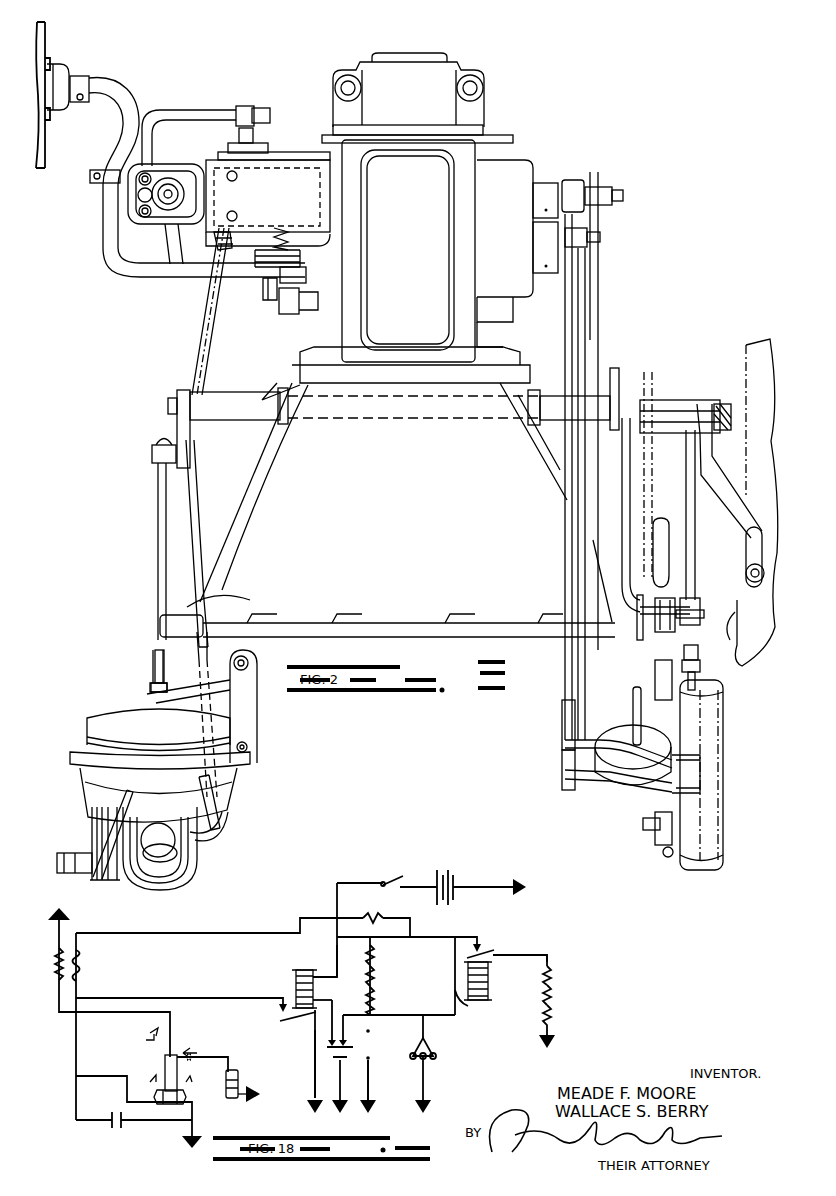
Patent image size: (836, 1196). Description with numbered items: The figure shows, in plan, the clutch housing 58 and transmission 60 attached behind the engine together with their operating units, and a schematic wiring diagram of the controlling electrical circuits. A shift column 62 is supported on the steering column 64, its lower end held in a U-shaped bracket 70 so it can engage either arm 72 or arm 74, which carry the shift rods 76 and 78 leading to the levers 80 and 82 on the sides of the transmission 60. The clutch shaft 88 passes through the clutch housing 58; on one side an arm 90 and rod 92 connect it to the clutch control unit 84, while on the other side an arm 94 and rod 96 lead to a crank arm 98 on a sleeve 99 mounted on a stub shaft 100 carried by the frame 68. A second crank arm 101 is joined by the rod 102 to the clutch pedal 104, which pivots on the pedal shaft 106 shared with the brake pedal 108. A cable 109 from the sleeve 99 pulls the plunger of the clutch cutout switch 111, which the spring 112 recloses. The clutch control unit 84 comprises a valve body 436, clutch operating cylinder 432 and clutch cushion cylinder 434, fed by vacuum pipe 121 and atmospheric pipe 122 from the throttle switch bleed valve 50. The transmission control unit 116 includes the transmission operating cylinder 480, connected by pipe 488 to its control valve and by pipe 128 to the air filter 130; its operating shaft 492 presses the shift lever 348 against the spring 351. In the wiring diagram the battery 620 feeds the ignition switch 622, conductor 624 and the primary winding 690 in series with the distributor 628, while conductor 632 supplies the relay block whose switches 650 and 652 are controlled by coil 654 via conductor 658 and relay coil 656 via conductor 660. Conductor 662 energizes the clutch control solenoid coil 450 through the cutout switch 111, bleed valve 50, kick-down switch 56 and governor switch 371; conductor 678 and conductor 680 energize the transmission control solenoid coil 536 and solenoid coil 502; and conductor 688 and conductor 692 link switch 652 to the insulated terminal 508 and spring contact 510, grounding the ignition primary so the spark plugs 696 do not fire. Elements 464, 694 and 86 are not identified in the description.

In FIG. 2, the frame 68 is at (46, 38).
In FIG. 2, the second air filter 130 is at (66, 50).
In FIG. 2, the pipe 128 is at (108, 90).
In FIG. 2, the transmission control unit 116 is at (168, 93).
In FIG. 2, the pipe 488 is at (212, 94).
In FIG. 2, the transmission operating cylinder 480 is at (235, 236).
In FIG. 2, the spring 351 is at (278, 228).
In FIG. 2, the transmission 60 is at (420, 257).
In FIG. 2, the lever 80 is at (549, 278).
In FIG. 2, the lever 82 is at (568, 182).
In FIG. 2, the operating shaft 492 is at (263, 281).
In FIG. 2, the shift lever 348 is at (279, 300).
In FIG. 2, the arm 94 is at (613, 368).
In FIG. 2, the brake pedal 108 is at (648, 380).
In FIG. 2, the pedal shaft 106 is at (668, 408).
In FIG. 2, the shaft 88 is at (553, 397).
In FIG. 2, the arm 90 is at (160, 442).
In FIG. 2, the second pipe 121 is at (189, 474).
In FIG. 2, the clutch housing 58 is at (400, 503).
In FIG. 2, the rod 96 is at (622, 482).
In FIG. 2, the clutch pedal 104 is at (724, 504).
In FIG. 2, the rod 92 is at (158, 518).
In FIG. 2, the shift rod 78 is at (583, 550).
In FIG. 2, the shift rod 76 is at (565, 568).
In FIG. 2, the rod 102 is at (695, 540).
In FIG. 2, the stub shaft 100 is at (694, 586).
In FIG. 2, the crank arm 98 is at (640, 640).
In FIG. 2, the sleeve 99 is at (660, 634).
In FIG. 2, the cable 109 is at (660, 669).
In FIG. 2, the shift column 62 is at (633, 700).
In FIG. 2, the U-shaped bracket 70 is at (628, 730).
In FIG. 2, the crank arm 101 is at (703, 657).
In FIG. 2, the steering column 64 is at (723, 714).
In FIG. 2, the arm 74 is at (565, 742).
In FIG. 2, the arm 72 is at (566, 778).
In FIG. 2, the clutch operating cylinder 432 is at (95, 727).
In FIG. 2, the third pipe 122 is at (228, 793).
In FIG. 2, the clutch control unit 84 is at (270, 807).
In FIG. 2, the rod 464 is at (93, 816).
In FIG. 2, the clutch cushion cylinder 434 is at (90, 844).
In FIG. 2, the body 436 is at (186, 874).
In FIG. 2, the clutch cutout switch 111 is at (655, 840).
In FIG. 18, the clutch cutout switch 111 is at (376, 1001).
In FIG. 2, the spring 112 is at (665, 857).
In FIG. 18, the ignition switch 622 is at (388, 881).
In FIG. 18, the battery 620 is at (455, 875).
In FIG. 18, the conductor 632 is at (412, 940).
In FIG. 18, the conductor 624 is at (240, 935).
In FIG. 18, the conductor 660 is at (337, 957).
In FIG. 18, the conductor 662 is at (384, 953).
In FIG. 18, the solenoid operated switch 650 is at (490, 956).
In FIG. 18, the conductor 678 is at (555, 948).
In FIG. 18, the primary winding 690 is at (79, 967).
In FIG. 18, the clutch control solenoid coil 450 is at (383, 976).
In FIG. 18, the transmission control solenoid coil 536 is at (550, 977).
In FIG. 18, the conductor 688 is at (151, 998).
In FIG. 18, the relay coil 656 is at (297, 979).
In FIG. 18, the coil 654 is at (490, 983).
In FIG. 18, the conductor 680 is at (550, 997).
In FIG. 18, the solenoid operated switch 652 is at (280, 1017).
In FIG. 18, the throttle switch, bleed valve 50 is at (378, 1021).
In FIG. 18, the solenoid coil 502 is at (550, 1017).
In FIG. 18, the conductor 692 is at (313, 1050).
In FIG. 18, the conductor 658 is at (466, 1007).
In FIG. 18, the insulated terminal 508 is at (316, 1071).
In FIG. 18, the solenoid 694 is at (184, 1048).
In FIG. 18, the spring contact 510 is at (316, 1079).
In FIG. 18, the governor switch 371 is at (435, 1056).
In FIG. 18, the distributor 628 is at (152, 1090).
In FIG. 18, the kick-down switch 56 is at (340, 1067).
In FIG. 18, the switch 86 is at (373, 1071).
In FIG. 18, the spark plugs 696 is at (216, 1086).